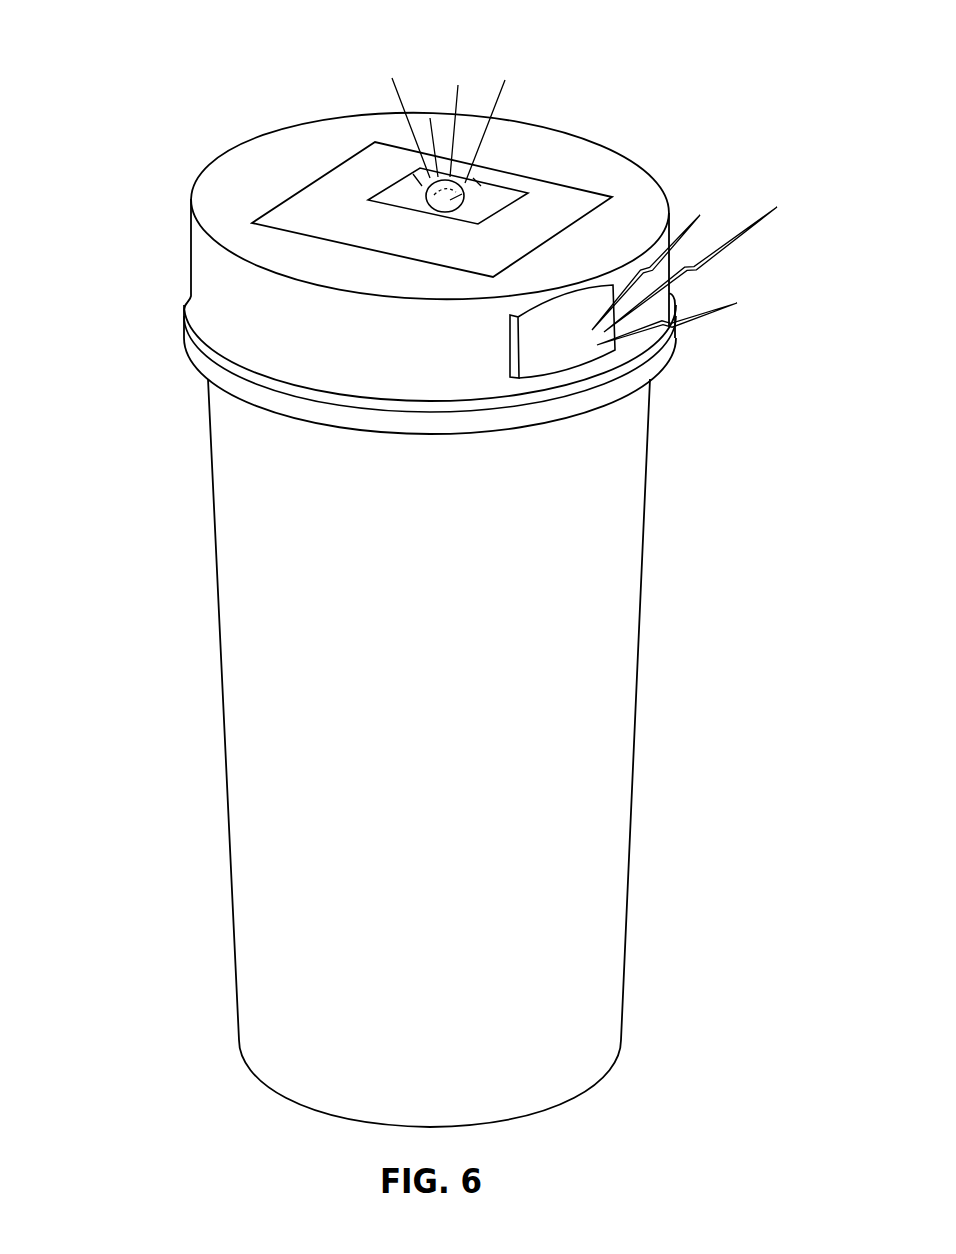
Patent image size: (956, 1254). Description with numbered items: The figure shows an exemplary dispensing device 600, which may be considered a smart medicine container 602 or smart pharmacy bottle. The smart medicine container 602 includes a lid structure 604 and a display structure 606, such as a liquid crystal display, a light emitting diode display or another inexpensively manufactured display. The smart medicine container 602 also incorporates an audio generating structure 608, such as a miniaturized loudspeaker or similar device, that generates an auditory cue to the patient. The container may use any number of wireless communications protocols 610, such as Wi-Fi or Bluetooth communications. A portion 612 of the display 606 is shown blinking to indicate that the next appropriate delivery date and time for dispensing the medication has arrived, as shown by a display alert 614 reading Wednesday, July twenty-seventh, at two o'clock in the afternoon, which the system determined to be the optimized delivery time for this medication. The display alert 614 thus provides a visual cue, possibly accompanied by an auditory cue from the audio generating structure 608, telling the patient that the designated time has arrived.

The dispensing device 600 is at (98, 96).
The smart medicine container 602 is at (210, 458).
The lid structure 604 is at (190, 247).
The display structure 606 is at (350, 173).
The audio generating structure 608 is at (550, 353).
The wireless communications protocols 610 is at (758, 210).
The portion of the display 612 is at (512, 188).
The display alert 614 is at (297, 218).